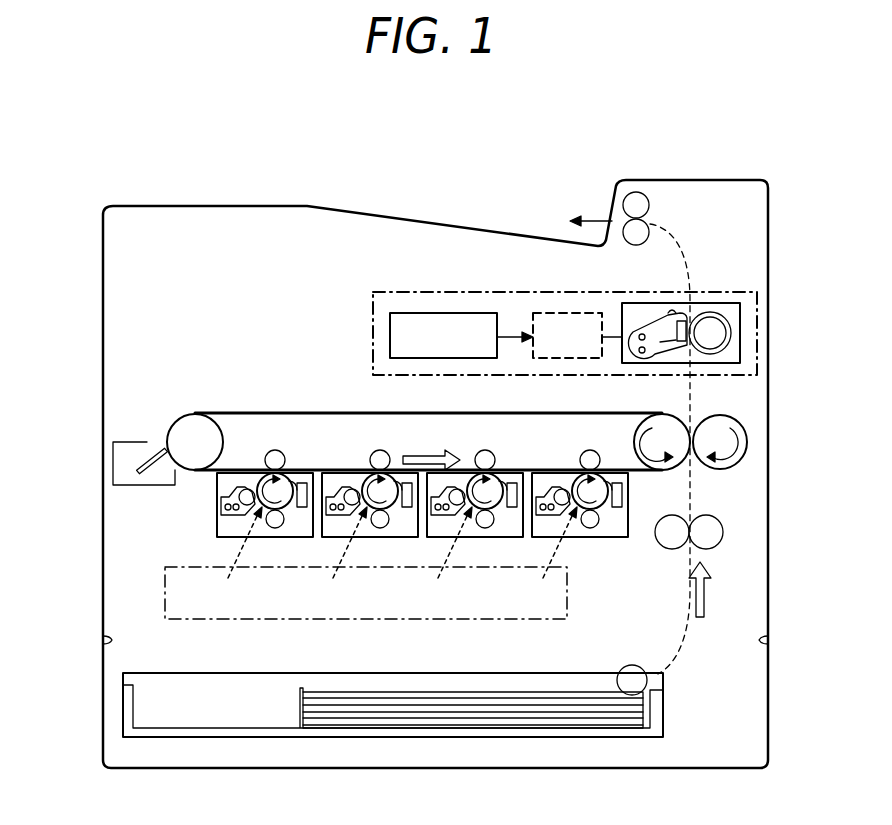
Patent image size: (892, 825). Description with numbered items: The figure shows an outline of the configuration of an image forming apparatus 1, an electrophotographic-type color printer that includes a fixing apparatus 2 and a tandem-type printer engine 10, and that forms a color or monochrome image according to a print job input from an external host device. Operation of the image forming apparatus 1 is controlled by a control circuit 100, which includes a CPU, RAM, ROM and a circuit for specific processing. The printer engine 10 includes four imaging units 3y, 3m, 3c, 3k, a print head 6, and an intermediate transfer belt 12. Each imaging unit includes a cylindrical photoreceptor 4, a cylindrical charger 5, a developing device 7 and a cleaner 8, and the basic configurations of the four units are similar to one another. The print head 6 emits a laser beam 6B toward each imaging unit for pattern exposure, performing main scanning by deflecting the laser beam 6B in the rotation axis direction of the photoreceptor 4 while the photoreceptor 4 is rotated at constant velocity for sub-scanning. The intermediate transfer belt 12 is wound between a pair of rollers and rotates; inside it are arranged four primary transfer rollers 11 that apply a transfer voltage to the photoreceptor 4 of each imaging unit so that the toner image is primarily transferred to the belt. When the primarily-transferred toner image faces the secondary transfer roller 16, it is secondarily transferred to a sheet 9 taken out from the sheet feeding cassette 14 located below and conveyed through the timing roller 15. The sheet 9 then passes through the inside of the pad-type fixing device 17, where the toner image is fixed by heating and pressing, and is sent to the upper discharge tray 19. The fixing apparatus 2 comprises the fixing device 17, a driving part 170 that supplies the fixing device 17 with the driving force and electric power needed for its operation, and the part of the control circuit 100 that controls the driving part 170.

The image forming apparatus 1 is at (372, 181).
The fixing apparatus 2 is at (405, 292).
The control circuit 100 is at (452, 313).
The driving part 170 is at (560, 313).
The fixing device 17 is at (705, 303).
The discharge tray 19 is at (512, 234).
The printer engine 10 is at (340, 406).
The intermediate transfer belt 12 is at (280, 413).
The primary transfer roller 11 is at (597, 451).
The photoreceptor 4 is at (563, 482).
The charger 5 is at (589, 528).
The developing device 7 is at (545, 496).
The cleaner 8 is at (623, 491).
The imaging unit 3y is at (276, 537).
The imaging unit 3m is at (370, 526).
The imaging unit 3c is at (475, 526).
The imaging unit 3k is at (588, 514).
The print head 6 is at (183, 567).
The laser beam 6B is at (552, 548).
The secondary transfer roller 16 is at (722, 470).
The timing roller 15 is at (720, 540).
The sheet 9 is at (560, 690).
The sheet feeding cassette 14 is at (665, 700).